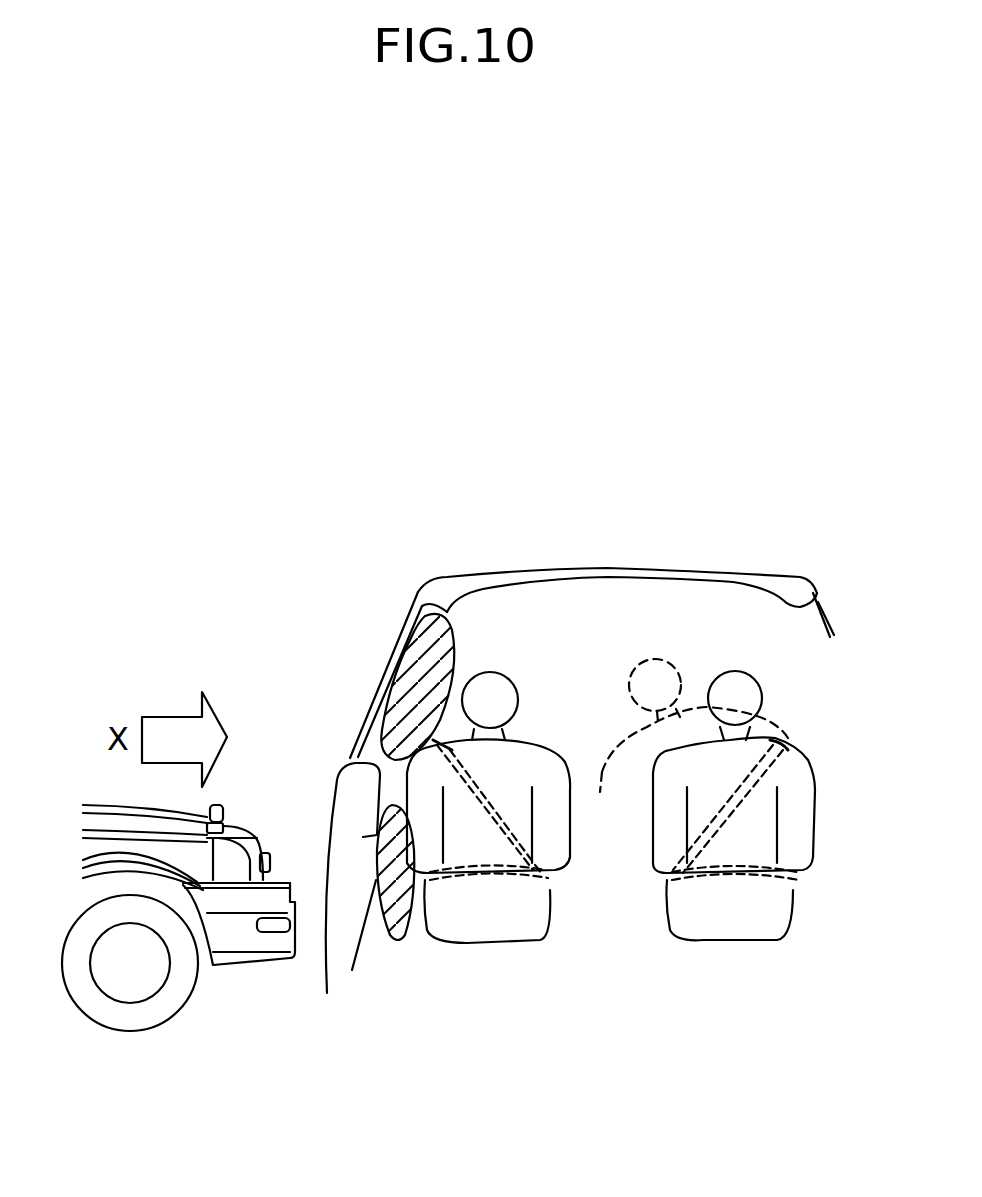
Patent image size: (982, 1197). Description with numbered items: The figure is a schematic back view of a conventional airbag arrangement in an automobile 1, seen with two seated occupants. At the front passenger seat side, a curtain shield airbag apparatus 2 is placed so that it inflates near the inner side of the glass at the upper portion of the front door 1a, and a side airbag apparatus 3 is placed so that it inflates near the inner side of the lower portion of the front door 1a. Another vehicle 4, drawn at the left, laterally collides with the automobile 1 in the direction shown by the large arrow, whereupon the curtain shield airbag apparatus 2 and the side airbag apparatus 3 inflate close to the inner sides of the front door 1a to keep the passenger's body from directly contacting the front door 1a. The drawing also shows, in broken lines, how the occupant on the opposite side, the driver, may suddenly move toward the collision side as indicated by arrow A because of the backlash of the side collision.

The automobile 1 is at (752, 530).
The front door 1a is at (345, 812).
The curtain shield airbag apparatus 2 is at (410, 667).
The side airbag apparatus 3 is at (398, 942).
The another vehicle 4 is at (252, 962).
The arrow A is at (727, 658).